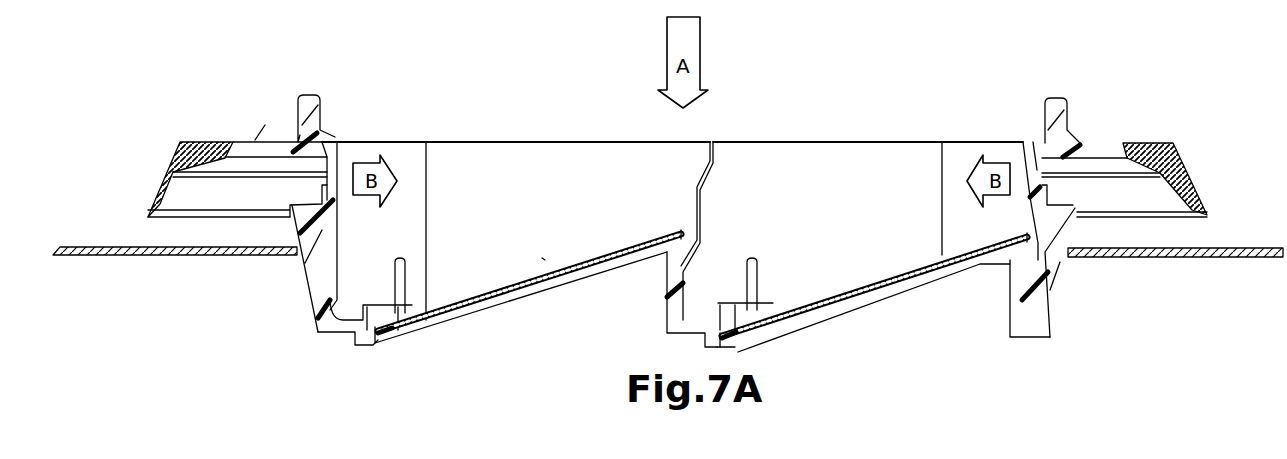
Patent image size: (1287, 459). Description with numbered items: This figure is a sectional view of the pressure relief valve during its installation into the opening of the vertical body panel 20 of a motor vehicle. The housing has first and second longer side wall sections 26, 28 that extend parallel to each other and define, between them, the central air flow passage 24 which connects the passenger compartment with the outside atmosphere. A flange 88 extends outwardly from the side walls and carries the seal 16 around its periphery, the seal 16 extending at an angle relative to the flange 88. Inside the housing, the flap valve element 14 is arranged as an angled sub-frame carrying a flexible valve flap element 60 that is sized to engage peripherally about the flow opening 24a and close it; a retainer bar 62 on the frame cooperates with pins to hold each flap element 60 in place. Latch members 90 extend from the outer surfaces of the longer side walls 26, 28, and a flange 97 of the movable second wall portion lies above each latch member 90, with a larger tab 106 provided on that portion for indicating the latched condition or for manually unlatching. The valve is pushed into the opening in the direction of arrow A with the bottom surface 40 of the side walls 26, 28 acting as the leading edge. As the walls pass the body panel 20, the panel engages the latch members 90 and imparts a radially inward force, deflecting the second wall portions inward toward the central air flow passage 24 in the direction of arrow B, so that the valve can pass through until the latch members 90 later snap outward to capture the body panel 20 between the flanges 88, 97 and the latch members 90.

The flap valve element 14 is at (484, 205).
The seal 16 is at (175, 172).
The body panel 20 is at (107, 240).
The central air flow passage 24 is at (748, 205).
The flow opening 24a is at (536, 295).
The first longer side wall section 26 is at (333, 147).
The second longer side wall section 28 is at (1035, 143).
The bottom surface 40 is at (330, 336).
The flexible valve flap element 60 is at (543, 256).
The retainer bar 62 is at (387, 314).
The flange 88 is at (253, 140).
The latch member 90 is at (313, 265).
The flange of the second portion 97 is at (267, 140).
The larger tab 106 is at (1057, 105).